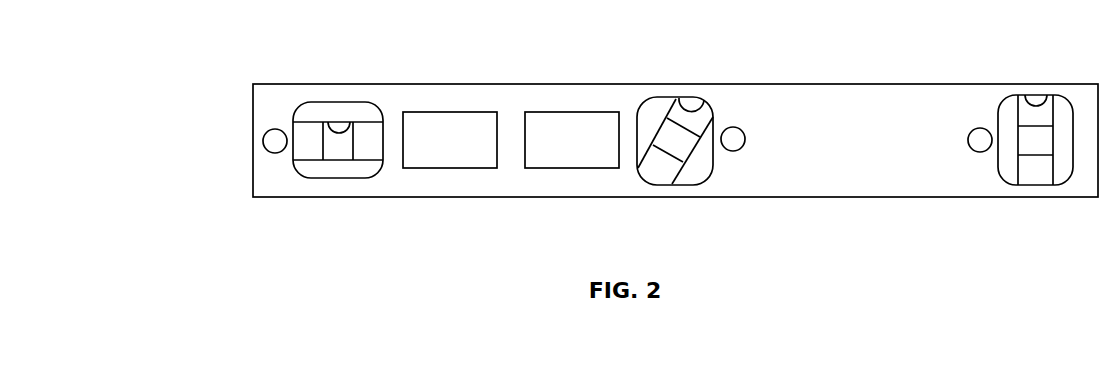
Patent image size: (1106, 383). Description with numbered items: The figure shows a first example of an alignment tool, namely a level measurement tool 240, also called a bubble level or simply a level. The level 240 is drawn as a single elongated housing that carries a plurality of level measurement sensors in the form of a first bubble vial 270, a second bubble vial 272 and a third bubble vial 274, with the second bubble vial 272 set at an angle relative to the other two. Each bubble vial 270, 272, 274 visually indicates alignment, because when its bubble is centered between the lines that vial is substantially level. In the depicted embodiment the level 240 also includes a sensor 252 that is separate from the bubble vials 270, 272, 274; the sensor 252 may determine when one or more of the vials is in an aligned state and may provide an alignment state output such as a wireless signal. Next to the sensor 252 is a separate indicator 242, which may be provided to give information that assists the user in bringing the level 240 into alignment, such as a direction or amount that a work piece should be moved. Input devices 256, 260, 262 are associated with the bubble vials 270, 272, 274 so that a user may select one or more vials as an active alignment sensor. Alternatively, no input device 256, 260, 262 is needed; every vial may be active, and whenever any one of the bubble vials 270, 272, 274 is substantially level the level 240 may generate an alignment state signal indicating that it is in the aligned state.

The level measurement tool 240 is at (290, 197).
The indicator 242 is at (572, 112).
The sensor 252 is at (450, 112).
The input device 256 is at (265, 133).
The input device 260 is at (735, 151).
The input device 262 is at (978, 152).
The first bubble vial 270 is at (338, 102).
The second bubble vial 272 is at (677, 100).
The third bubble vial 274 is at (1037, 97).